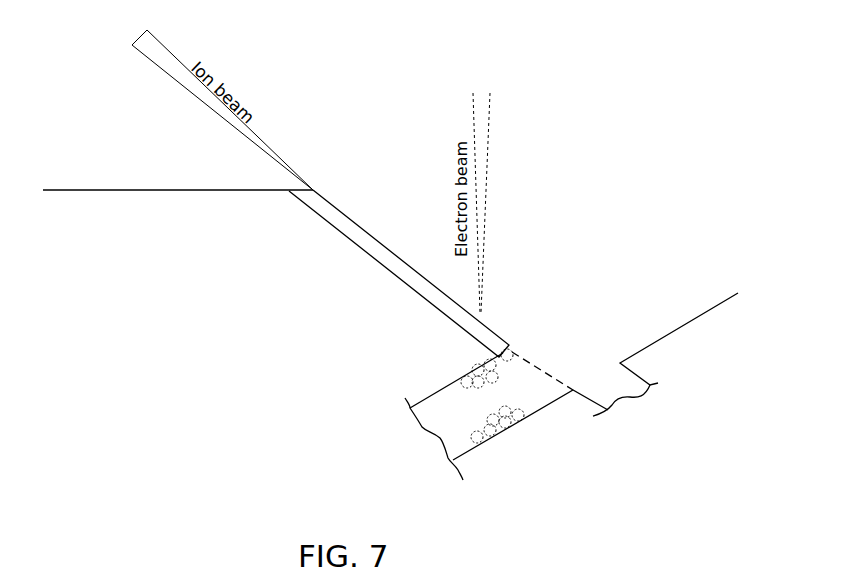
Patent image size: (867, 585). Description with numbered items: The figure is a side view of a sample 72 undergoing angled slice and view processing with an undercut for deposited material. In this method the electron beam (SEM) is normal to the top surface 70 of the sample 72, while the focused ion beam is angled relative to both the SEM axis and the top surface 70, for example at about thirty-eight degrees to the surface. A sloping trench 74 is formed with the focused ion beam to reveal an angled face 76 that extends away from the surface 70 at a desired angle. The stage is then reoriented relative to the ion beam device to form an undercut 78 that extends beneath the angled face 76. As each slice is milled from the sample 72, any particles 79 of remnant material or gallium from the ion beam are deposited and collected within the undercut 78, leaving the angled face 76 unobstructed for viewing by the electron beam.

The top surface 70 is at (185, 190).
The sample 72 is at (178, 150).
The sloping trench 74 is at (666, 304).
The angled face 76 is at (380, 247).
The undercut 78 is at (450, 414).
The particles 79 is at (503, 377).